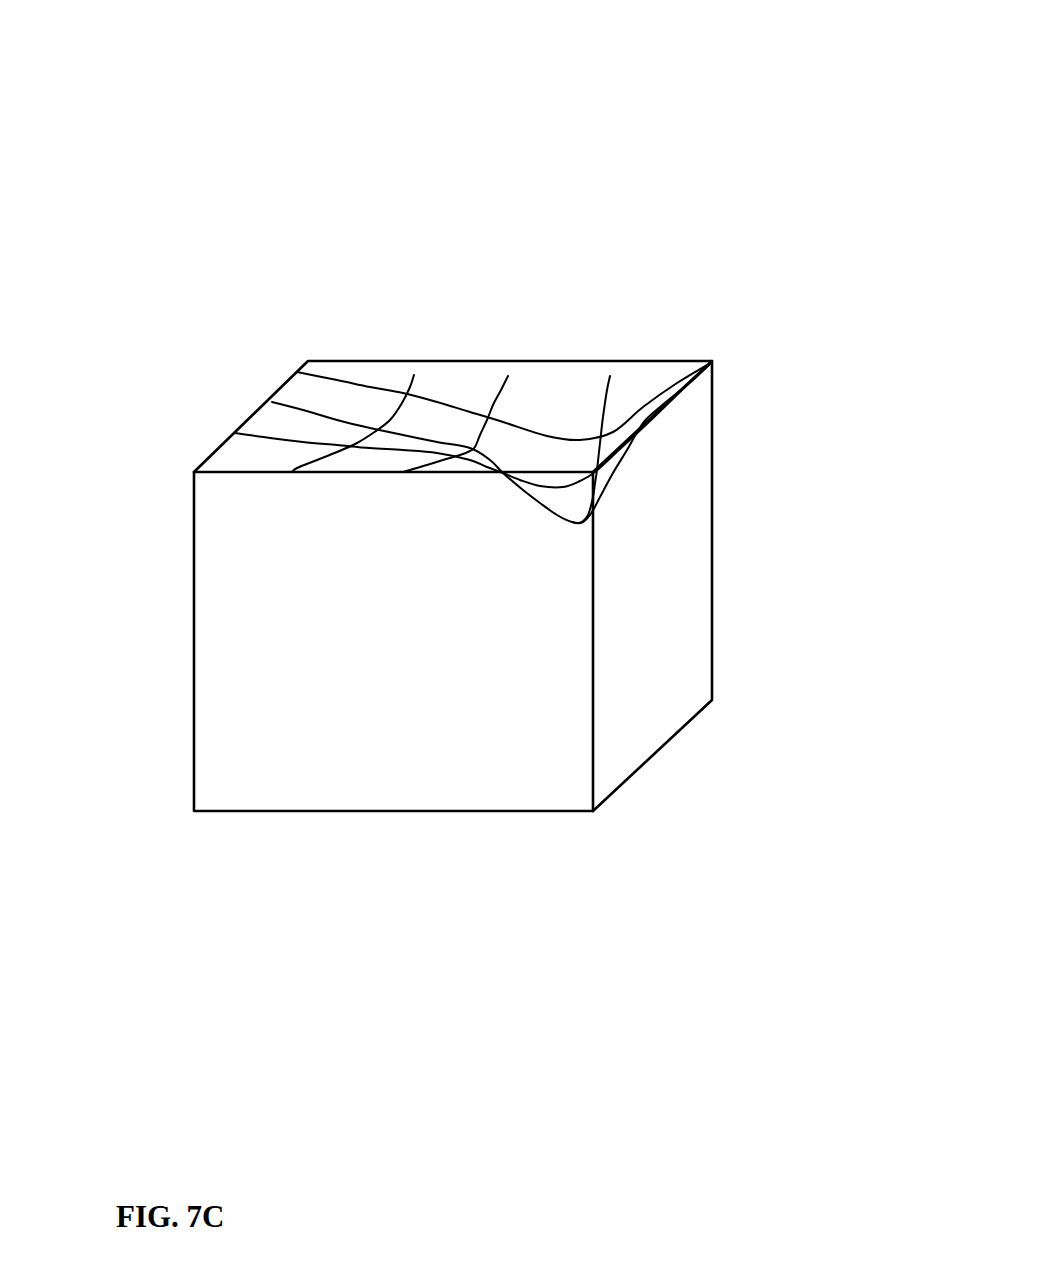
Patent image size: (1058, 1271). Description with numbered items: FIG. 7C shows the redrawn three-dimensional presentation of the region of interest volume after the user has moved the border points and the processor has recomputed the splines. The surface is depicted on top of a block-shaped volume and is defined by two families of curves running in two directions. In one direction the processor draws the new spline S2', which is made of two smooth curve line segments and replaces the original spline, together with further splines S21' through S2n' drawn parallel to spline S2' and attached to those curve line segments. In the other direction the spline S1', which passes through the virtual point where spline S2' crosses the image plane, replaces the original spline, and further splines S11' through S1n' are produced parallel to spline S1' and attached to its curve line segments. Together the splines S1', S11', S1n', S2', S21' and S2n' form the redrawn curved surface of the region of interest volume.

The further spline parallel to S2' S21' is at (409, 289).
The new spline S2' is at (397, 411).
The further spline parallel to S2' S2n' is at (379, 424).
The further spline parallel to S1' S1n' is at (491, 256).
The spline S1' is at (591, 296).
The further spline parallel to S1' S11' is at (691, 380).